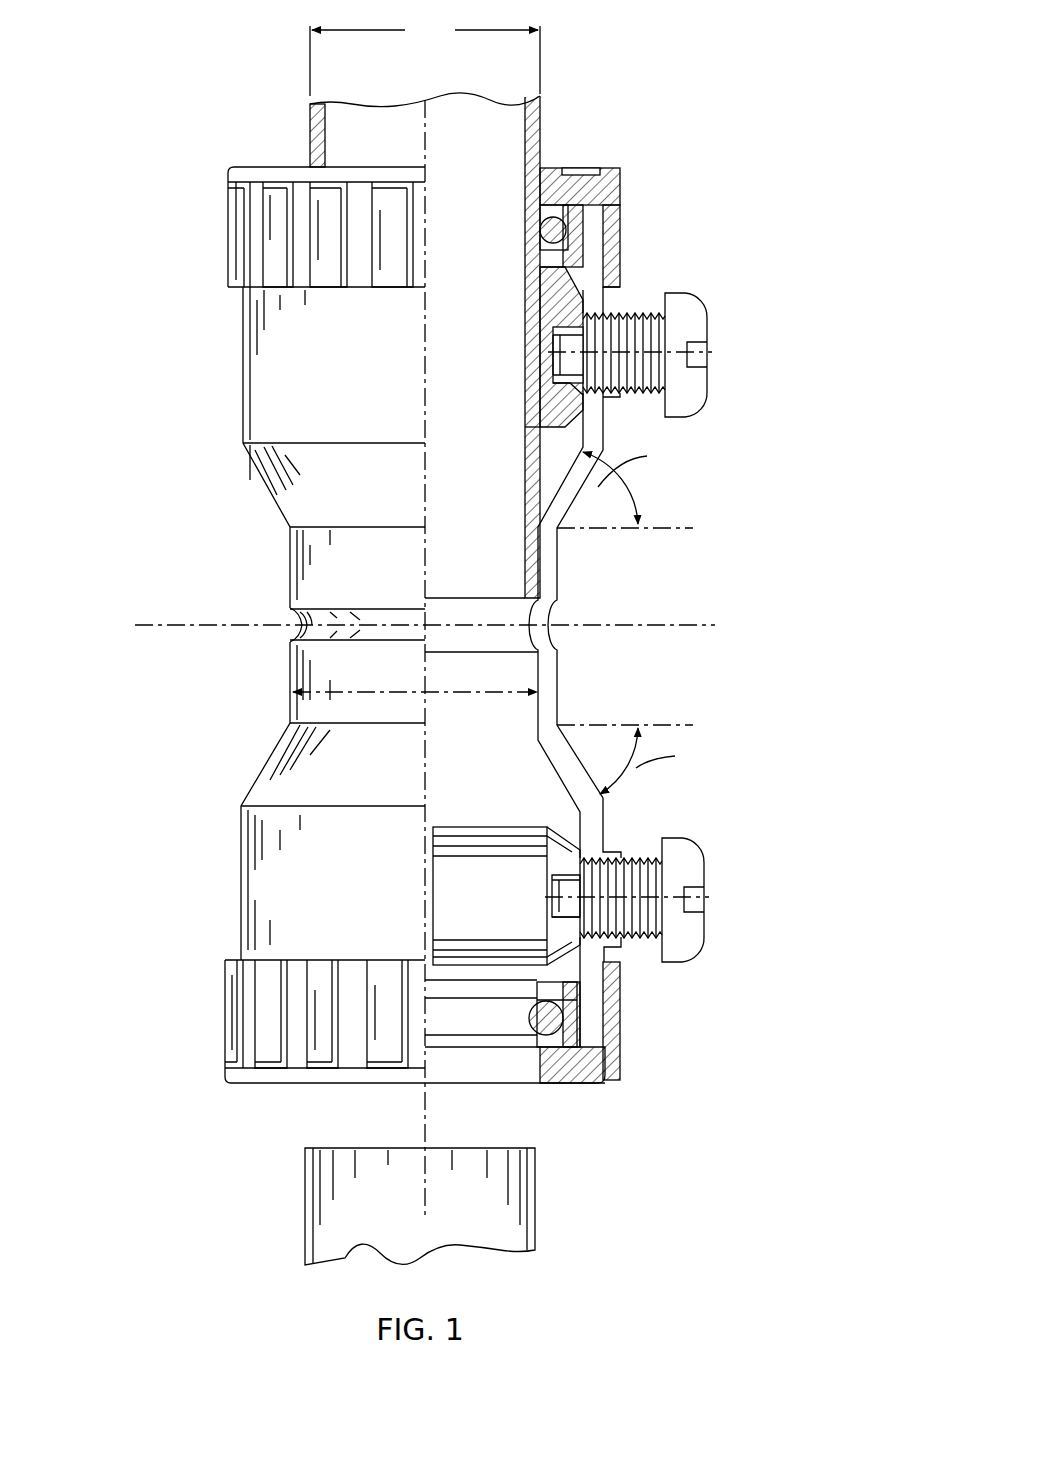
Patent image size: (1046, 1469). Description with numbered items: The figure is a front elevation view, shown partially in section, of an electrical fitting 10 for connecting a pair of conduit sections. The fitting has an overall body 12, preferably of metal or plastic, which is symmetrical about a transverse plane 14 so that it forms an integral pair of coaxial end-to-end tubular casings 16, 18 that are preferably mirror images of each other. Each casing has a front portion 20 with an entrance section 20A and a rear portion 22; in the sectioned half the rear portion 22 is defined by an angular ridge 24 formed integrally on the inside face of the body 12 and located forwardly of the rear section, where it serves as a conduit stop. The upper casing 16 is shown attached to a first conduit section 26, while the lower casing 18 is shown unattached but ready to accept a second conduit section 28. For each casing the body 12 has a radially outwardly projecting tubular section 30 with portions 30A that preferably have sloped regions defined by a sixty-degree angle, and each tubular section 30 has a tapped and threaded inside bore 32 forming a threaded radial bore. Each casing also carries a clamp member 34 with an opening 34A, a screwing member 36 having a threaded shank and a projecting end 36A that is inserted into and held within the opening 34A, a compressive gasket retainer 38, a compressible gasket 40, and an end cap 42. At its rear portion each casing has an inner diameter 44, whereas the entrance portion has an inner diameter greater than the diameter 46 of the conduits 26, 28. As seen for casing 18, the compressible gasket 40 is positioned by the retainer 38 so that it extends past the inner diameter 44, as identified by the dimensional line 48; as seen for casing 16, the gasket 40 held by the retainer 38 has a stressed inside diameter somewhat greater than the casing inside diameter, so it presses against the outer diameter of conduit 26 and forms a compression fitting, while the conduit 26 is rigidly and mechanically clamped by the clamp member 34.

The electrical fitting 10 is at (704, 84).
The overall body 12 is at (551, 575).
The transverse plane 14 is at (697, 625).
The tubular casing 16 is at (243, 376).
The tubular casing 18 is at (242, 878).
The front portion 20 is at (303, 161).
The entrance section 20A is at (517, 1047).
The rear portion 22 is at (296, 617).
The angular ridge 24 is at (557, 602).
The first conduit section 26 is at (543, 127).
The second conduit section 28 is at (538, 1185).
The tubular section 30 is at (600, 303).
The portions 30A is at (583, 492).
The inside bore 32 is at (632, 303).
The clamp member 34 is at (603, 297).
The opening 34A is at (558, 393).
The screwing member 36 is at (698, 323).
The projecting end 36A is at (558, 340).
The compressive gasket retainer 38 is at (584, 214).
The compressible gasket 40 is at (557, 217).
The end cap 42 is at (610, 166).
The inner diameter 44 is at (472, 697).
The diameter 46 is at (425, 54).
The dimensional line 48 is at (556, 778).